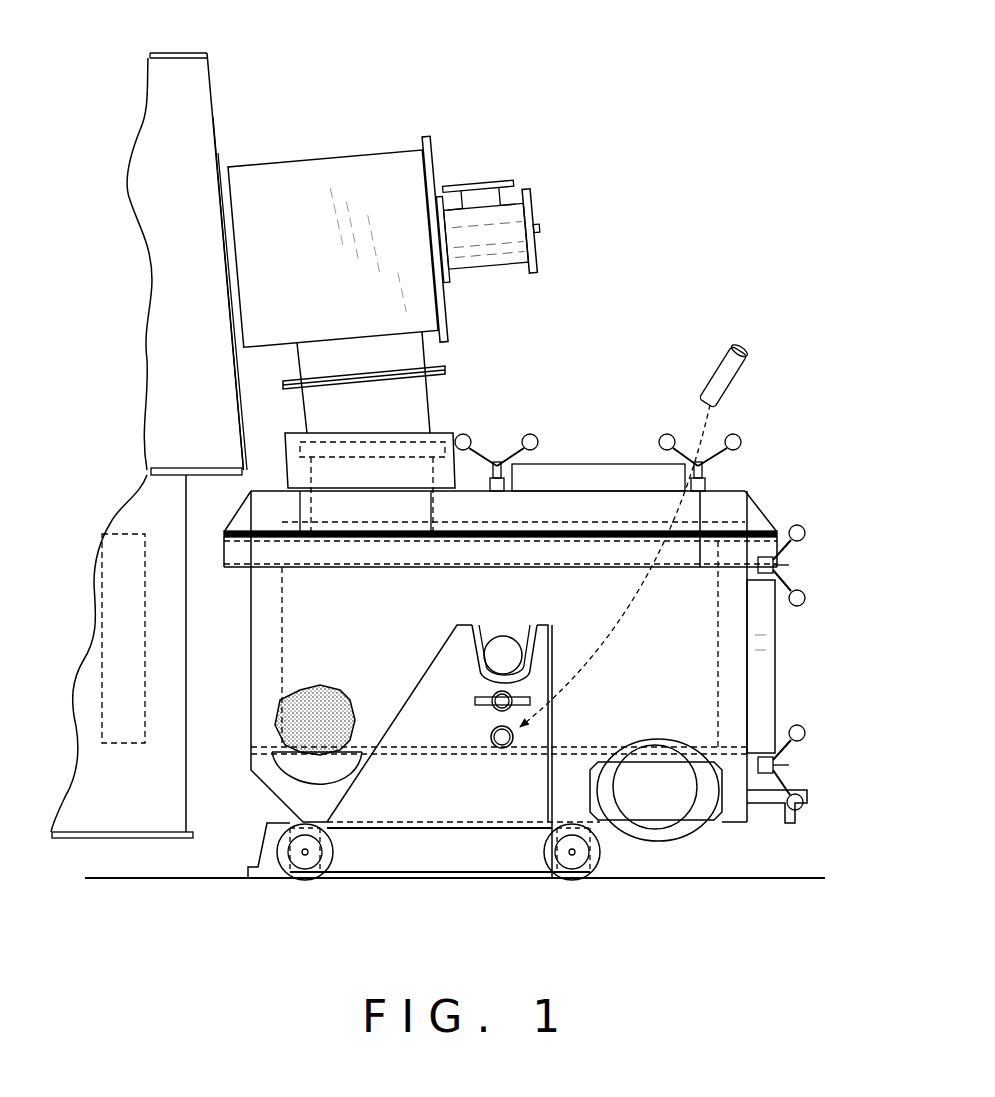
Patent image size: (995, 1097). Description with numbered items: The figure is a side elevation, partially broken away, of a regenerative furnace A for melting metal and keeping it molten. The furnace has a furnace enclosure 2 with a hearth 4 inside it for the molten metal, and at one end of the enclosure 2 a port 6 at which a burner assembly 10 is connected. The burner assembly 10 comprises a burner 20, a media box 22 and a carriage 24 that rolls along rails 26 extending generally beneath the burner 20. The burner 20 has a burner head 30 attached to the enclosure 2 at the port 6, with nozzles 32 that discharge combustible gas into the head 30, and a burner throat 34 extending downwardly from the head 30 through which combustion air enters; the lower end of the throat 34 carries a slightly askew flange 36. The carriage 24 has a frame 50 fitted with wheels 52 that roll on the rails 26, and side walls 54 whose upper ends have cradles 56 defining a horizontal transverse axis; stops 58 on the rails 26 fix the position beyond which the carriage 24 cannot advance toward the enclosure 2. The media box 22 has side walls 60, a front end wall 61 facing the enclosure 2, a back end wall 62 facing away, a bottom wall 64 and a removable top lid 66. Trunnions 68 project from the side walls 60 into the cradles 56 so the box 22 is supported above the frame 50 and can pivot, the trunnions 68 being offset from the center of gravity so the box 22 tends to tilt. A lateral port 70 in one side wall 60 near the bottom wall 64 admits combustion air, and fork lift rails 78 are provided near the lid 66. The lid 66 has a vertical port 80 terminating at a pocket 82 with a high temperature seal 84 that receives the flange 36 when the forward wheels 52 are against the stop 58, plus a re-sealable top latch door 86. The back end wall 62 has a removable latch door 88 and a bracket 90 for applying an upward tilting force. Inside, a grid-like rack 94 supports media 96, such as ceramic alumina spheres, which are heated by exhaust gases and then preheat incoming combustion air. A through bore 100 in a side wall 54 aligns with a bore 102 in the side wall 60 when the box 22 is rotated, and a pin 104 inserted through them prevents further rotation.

The furnace enclosure 2 is at (215, 85).
The hearth 4 is at (122, 552).
The port 6 is at (221, 237).
The burner assembly 10 is at (600, 254).
The burner 20 is at (413, 208).
The media box 22 is at (519, 603).
The carriage 24 is at (556, 733).
The rails 26 is at (695, 880).
The burner head 30 is at (329, 209).
The nozzles 32 is at (520, 222).
The burner throat 34 is at (332, 417).
The flange 36 is at (437, 446).
The frame 50 is at (415, 860).
The wheels 52 is at (313, 874).
The side walls 54 is at (457, 800).
The cradles 56 is at (553, 672).
The stops 58 is at (263, 850).
The side walls 60 is at (625, 615).
The front end wall 61 is at (249, 695).
The back end wall 62 is at (750, 680).
The bottom wall 64 is at (598, 833).
The top lid 66 is at (570, 508).
The trunnions 68 is at (505, 660).
The port 70 is at (700, 823).
The fork lift rails 78 is at (723, 548).
The vertical port 80 is at (295, 477).
The pocket 82 is at (396, 432).
The high temperature seal 84 is at (420, 418).
The top latch door 86 is at (638, 480).
The latch door 88 is at (762, 617).
The bracket 90 is at (794, 821).
The rack 94 is at (425, 745).
The media 96 is at (338, 695).
The through bore 100 is at (515, 736).
The bore 102 is at (490, 737).
The pin 104 is at (740, 379).
The regenerative furnace A is at (540, 130).